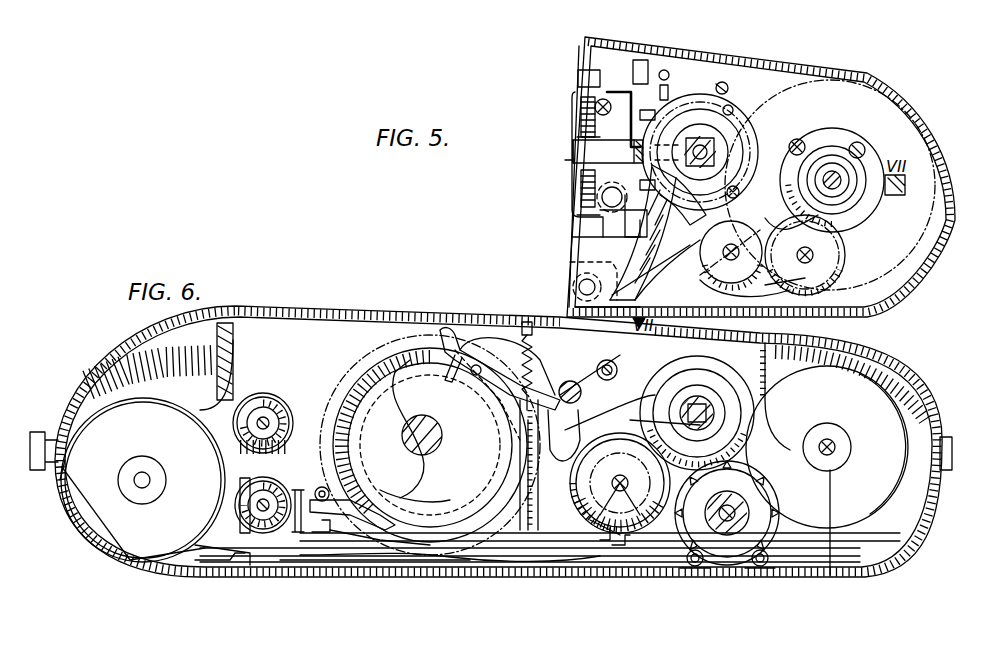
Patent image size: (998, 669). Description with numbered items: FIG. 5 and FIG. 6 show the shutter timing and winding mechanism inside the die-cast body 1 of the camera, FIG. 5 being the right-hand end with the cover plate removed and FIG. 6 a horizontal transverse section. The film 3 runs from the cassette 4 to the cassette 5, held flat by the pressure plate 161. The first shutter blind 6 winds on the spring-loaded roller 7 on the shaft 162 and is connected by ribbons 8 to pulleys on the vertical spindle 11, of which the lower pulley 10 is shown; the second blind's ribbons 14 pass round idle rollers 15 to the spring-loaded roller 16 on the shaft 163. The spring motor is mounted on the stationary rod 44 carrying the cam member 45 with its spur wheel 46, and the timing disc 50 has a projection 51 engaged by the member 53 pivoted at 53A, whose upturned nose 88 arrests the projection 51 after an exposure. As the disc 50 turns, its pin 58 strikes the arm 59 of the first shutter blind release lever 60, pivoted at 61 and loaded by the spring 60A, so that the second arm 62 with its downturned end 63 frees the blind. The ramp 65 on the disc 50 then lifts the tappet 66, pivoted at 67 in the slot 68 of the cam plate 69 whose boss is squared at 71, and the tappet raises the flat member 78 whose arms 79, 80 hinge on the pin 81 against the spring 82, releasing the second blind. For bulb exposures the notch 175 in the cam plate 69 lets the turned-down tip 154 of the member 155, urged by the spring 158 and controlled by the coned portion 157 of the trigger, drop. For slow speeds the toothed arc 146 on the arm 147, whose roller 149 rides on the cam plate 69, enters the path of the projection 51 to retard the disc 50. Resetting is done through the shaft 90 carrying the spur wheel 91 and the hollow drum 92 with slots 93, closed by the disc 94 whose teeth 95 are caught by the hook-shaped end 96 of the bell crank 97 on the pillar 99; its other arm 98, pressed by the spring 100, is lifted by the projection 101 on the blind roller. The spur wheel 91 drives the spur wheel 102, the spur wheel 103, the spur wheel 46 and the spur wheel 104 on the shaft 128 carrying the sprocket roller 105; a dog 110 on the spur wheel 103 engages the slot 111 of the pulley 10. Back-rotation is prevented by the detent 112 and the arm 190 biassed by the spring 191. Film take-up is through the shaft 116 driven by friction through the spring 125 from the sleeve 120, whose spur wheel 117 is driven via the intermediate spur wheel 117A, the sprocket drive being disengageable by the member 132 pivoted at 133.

In FIG. 5, the die-cast body 1 is at (885, 95).
In FIG. 6, the die-cast body 1 is at (875, 360).
In FIG. 6, the film 3 is at (665, 545).
In FIG. 6, the cassette 4 is at (162, 545).
In FIG. 6, the cassette 5 is at (830, 575).
In FIG. 6, the first shutter blind 6 is at (258, 482).
In FIG. 6, the spring-loaded roller 7 is at (250, 530).
In FIG. 6, the ribbons 8 is at (330, 531).
In FIG. 6, the lower pulley 10 is at (600, 540).
In FIG. 6, the vertical spindle 11 is at (615, 545).
In FIG. 6, the ribbons 14 is at (228, 462).
In FIG. 6, the idle rollers 15 is at (280, 489).
In FIG. 6, the spring-loaded roller 16 is at (280, 407).
In FIG. 5, the stationary vertical rod 44 is at (700, 148).
In FIG. 6, the stationary vertical rod 44 is at (710, 408).
In FIG. 6, the cam member 45 is at (712, 415).
In FIG. 6, the spur wheel 46 is at (697, 368).
In FIG. 5, the disc 50 is at (748, 146).
In FIG. 5, the projection 51 is at (655, 232).
In FIG. 5, the member 53 is at (660, 80).
In FIG. 5, the pivot 53A is at (641, 70).
In FIG. 5, the pin 58 is at (813, 163).
In FIG. 5, the arm 59 is at (683, 201).
In FIG. 5, the first shutter blind release lever 60 is at (605, 309).
In FIG. 5, the spring 60A is at (575, 290).
In FIG. 5, the pivot 61 is at (600, 282).
In FIG. 5, the second arm 62 is at (603, 193).
In FIG. 5, the downturned portion 63 is at (600, 200).
In FIG. 5, the ramp 65 is at (693, 146).
In FIG. 5, the tappet 66 is at (730, 105).
In FIG. 5, the pivot 67 is at (722, 120).
In FIG. 5, the slot 68 is at (712, 81).
In FIG. 5, the cam plate 69 is at (740, 114).
In FIG. 5, the squared end 71 is at (760, 132).
In FIG. 5, the flat horizontal member 78 is at (673, 84).
In FIG. 5, the arm 79 is at (606, 91).
In FIG. 5, the arm 80 is at (625, 230).
In FIG. 5, the pin 81 is at (580, 137).
In FIG. 5, the coiled spring 82 is at (581, 178).
In FIG. 5, the upturned nose 88 is at (570, 162).
In FIG. 6, the shaft 90 is at (423, 435).
In FIG. 6, the spur wheel 91 is at (368, 362).
In FIG. 6, the hollow drum 92 is at (372, 377).
In FIG. 6, the slots 93 is at (462, 432).
In FIG. 6, the disc 94 is at (480, 507).
In FIG. 6, the radial teeth 95 is at (463, 382).
In FIG. 6, the hook-shaped end 96 is at (430, 313).
In FIG. 6, the bell crank 97 is at (612, 362).
In FIG. 6, the arm 98 is at (555, 507).
In FIG. 6, the pillar 99 is at (585, 396).
In FIG. 6, the spring 100 is at (570, 435).
In FIG. 6, the dimple-like projection 101 is at (555, 512).
In FIG. 6, the spur wheel 102 is at (600, 394).
In FIG. 6, the spur wheel 103 is at (700, 426).
In FIG. 6, the spur wheel 104 is at (775, 492).
In FIG. 6, the sprocket roller 105 is at (727, 535).
In FIG. 6, the dog 110 is at (620, 483).
In FIG. 6, the slot 111 is at (640, 522).
In FIG. 6, the spring-loaded detent 112 is at (355, 522).
In FIG. 5, the shaft 116 is at (850, 188).
In FIG. 6, the shaft 116 is at (834, 446).
In FIG. 5, the spur wheel 117 is at (850, 220).
In FIG. 5, the intermediate spur wheel 117A is at (808, 278).
In FIG. 5, the sleeve 120 is at (840, 176).
In FIG. 5, the spring 125 is at (845, 200).
In FIG. 6, the shaft 128 is at (760, 566).
In FIG. 5, the member 132 is at (805, 255).
In FIG. 5, the pivot 133 is at (742, 216).
In FIG. 5, the toothed arc 146 is at (656, 271).
In FIG. 5, the arm 147 is at (612, 262).
In FIG. 5, the small roller 149 is at (600, 206).
In FIG. 5, the turned-down tip 154 is at (608, 151).
In FIG. 5, the member 155 is at (578, 150).
In FIG. 5, the coned portion 157 is at (596, 100).
In FIG. 5, the spring 158 is at (582, 114).
In FIG. 6, the pressure plate 161 is at (420, 552).
In FIG. 6, the shaft 162 is at (250, 507).
In FIG. 6, the shaft 163 is at (242, 432).
In FIG. 5, the notch 175 is at (790, 149).
In FIG. 6, the arm 190 is at (500, 427).
In FIG. 6, the spring 191 is at (525, 347).